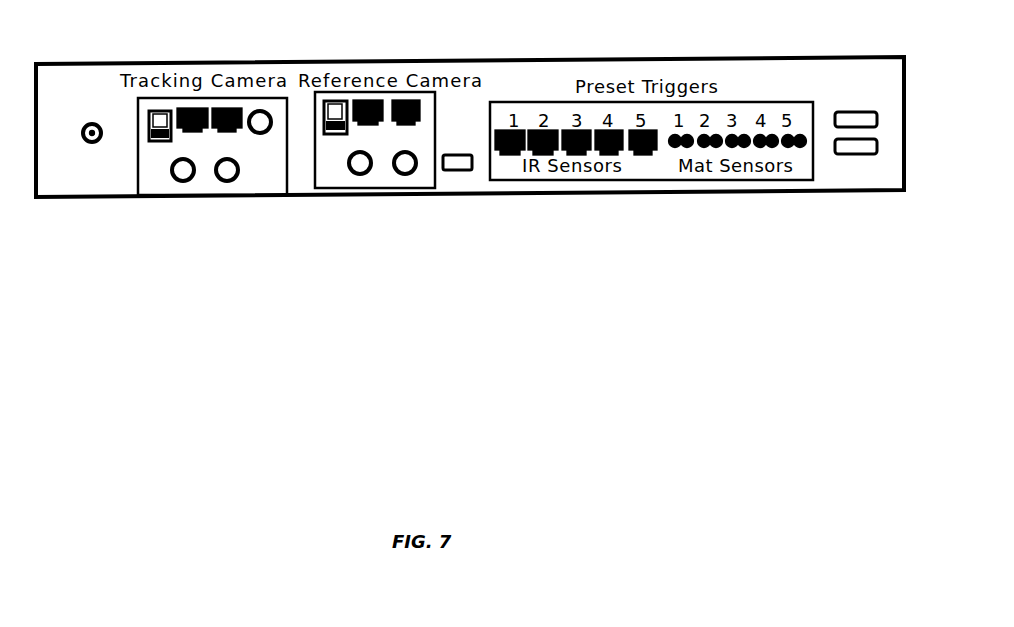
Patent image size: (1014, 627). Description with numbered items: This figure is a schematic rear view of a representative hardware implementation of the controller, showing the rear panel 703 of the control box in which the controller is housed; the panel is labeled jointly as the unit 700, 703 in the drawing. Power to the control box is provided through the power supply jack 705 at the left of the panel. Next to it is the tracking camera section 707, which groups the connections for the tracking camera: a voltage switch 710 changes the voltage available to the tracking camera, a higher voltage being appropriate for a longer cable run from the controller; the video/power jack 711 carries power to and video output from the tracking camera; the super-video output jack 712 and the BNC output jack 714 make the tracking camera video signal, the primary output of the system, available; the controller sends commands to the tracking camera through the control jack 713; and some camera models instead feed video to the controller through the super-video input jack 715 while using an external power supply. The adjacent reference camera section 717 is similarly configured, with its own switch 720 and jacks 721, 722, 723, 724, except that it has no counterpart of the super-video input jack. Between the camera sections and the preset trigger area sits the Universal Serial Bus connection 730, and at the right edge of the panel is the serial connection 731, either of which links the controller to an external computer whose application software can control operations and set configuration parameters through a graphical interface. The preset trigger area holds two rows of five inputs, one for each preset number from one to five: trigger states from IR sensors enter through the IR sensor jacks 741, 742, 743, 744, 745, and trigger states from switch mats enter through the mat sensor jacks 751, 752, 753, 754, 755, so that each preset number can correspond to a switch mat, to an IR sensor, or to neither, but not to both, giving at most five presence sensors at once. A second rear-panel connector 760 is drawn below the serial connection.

The control unit 700 is at (468, 106).
The rear panel 703 is at (470, 127).
The power supply jack 705 is at (59, 182).
The tracking camera section 707 is at (177, 143).
The voltage switch 710 is at (101, 205).
The video/power jack 711 is at (122, 220).
The super-video output jack 712 is at (144, 233).
The control jack 713 is at (123, 275).
The BNC output jack 714 is at (145, 291).
The super-video input jack 715 is at (164, 285).
The reference camera section 717 is at (430, 132).
The reference camera power switch 720 is at (278, 196).
The reference camera connector 721 is at (297, 211).
The reference camera jack 722 is at (296, 251).
The reference camera connector 723 is at (324, 241).
The reference camera jack 724 is at (322, 283).
The Universal Serial Bus (USB) connection 730 is at (423, 206).
The serial (RS-232) connection 731 is at (798, 68).
The IR sensor jack 741 is at (456, 212).
The IR sensor jack 742 is at (484, 227).
The IR sensor jack 743 is at (509, 240).
The IR sensor jack 744 is at (533, 253).
The IR sensor jack 745 is at (559, 267).
The mat sensor jack 751 is at (645, 219).
The mat sensor jack 752 is at (667, 233).
The mat sensor jack 753 is at (689, 246).
The mat sensor jack 754 is at (711, 259).
The mat sensor jack 755 is at (733, 272).
The button 760 is at (827, 207).